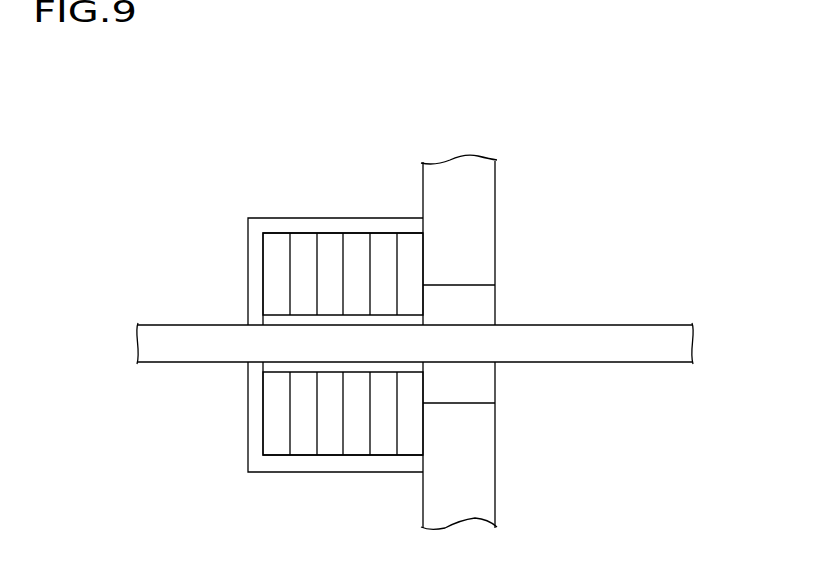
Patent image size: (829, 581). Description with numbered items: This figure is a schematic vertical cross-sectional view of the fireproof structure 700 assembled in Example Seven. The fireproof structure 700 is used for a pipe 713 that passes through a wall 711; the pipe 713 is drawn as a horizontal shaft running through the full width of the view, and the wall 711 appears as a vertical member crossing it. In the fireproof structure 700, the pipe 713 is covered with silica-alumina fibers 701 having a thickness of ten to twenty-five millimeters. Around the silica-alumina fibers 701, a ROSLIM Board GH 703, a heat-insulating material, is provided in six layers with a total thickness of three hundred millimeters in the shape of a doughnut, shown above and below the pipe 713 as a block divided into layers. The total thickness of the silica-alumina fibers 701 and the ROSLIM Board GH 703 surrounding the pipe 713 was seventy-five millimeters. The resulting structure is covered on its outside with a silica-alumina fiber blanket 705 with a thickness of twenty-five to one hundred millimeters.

The fireproof structure 700 is at (345, 129).
The silica-alumina fibers 701 is at (270, 366).
The ROSLIM Board GH 703 is at (277, 278).
The silica-alumina fiber blanket 705 is at (277, 223).
The wall 711 is at (495, 222).
The pipe 713 is at (596, 325).